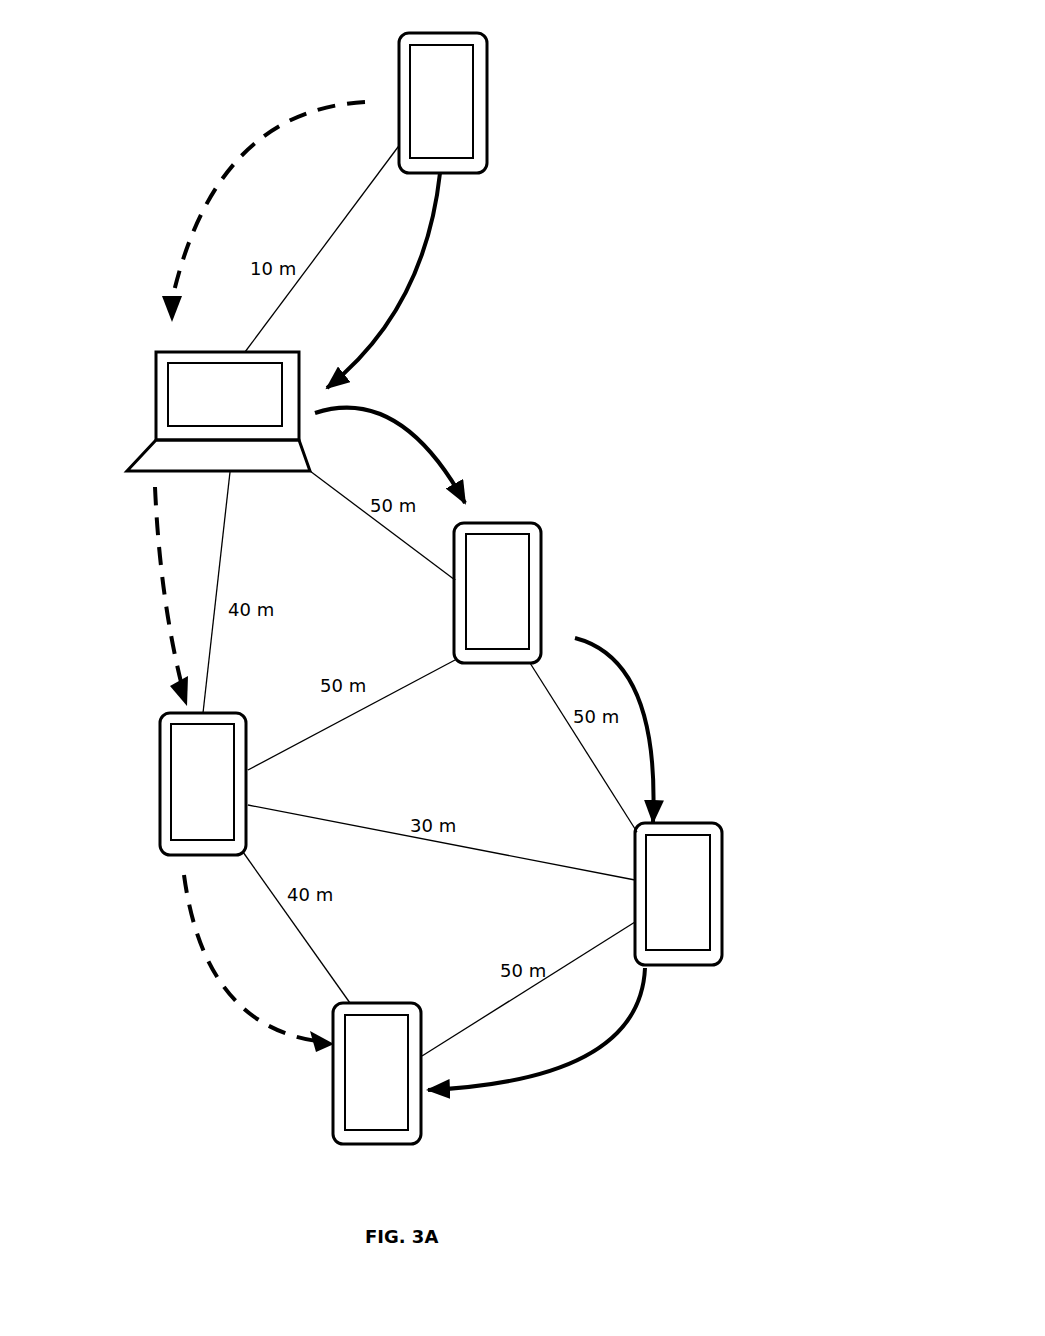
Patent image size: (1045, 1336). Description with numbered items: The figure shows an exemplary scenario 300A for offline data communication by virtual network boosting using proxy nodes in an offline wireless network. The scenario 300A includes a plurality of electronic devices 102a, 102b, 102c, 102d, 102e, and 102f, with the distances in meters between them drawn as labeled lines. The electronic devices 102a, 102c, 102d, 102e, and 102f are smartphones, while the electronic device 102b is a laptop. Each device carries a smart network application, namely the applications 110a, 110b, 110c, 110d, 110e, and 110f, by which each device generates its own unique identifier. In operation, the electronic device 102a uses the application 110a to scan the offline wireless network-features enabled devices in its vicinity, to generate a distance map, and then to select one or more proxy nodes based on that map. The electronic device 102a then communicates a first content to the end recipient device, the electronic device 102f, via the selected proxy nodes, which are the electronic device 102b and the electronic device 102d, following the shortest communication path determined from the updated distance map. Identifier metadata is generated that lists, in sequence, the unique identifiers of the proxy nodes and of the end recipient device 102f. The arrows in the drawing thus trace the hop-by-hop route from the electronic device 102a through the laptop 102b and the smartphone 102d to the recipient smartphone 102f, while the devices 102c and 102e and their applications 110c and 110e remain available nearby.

The exemplary scenario 300A is at (675, 77).
The electronic device 102a is at (478, 141).
The electronic device 102b is at (180, 433).
The electronic device 102c is at (539, 553).
The electronic device 102d is at (159, 824).
The electronic device 102e is at (727, 858).
The electronic device 102f is at (333, 1098).
The application 110a is at (443, 130).
The application 110b is at (155, 458).
The application 110c is at (508, 582).
The application 110d is at (192, 836).
The application 110e is at (693, 925).
The application 110f is at (335, 1092).